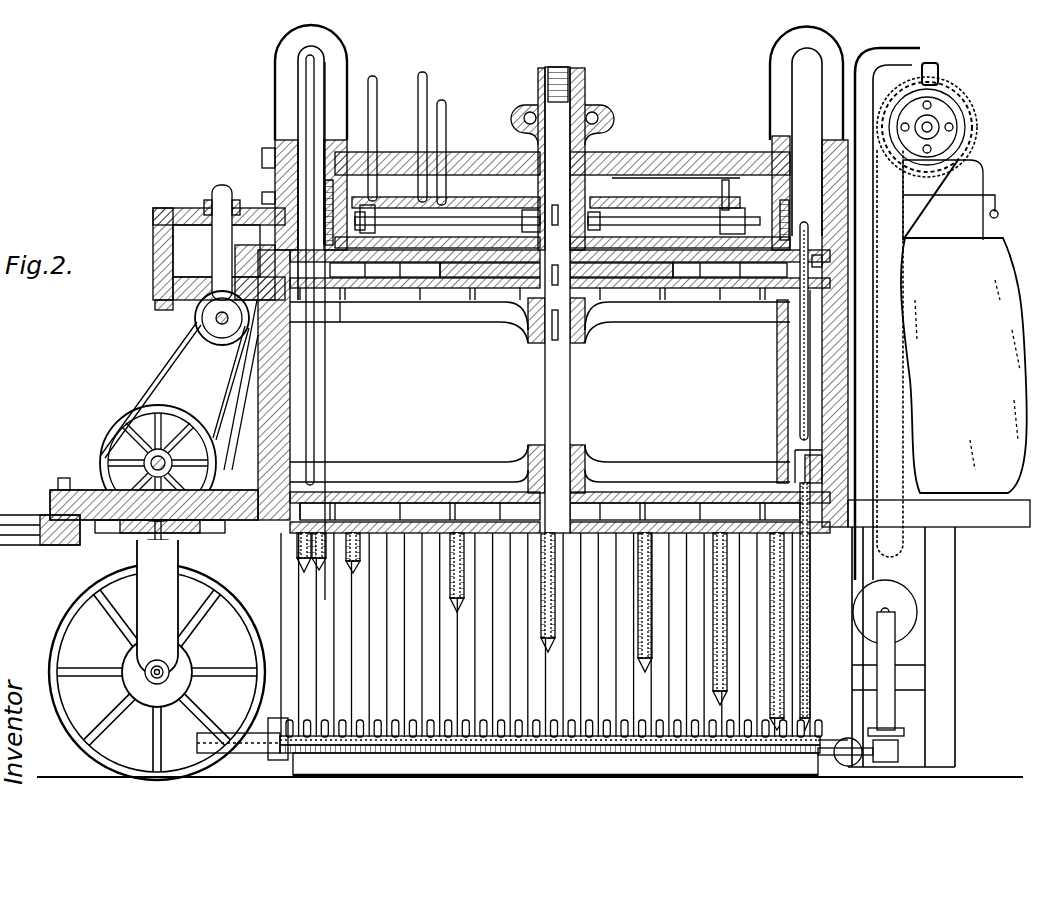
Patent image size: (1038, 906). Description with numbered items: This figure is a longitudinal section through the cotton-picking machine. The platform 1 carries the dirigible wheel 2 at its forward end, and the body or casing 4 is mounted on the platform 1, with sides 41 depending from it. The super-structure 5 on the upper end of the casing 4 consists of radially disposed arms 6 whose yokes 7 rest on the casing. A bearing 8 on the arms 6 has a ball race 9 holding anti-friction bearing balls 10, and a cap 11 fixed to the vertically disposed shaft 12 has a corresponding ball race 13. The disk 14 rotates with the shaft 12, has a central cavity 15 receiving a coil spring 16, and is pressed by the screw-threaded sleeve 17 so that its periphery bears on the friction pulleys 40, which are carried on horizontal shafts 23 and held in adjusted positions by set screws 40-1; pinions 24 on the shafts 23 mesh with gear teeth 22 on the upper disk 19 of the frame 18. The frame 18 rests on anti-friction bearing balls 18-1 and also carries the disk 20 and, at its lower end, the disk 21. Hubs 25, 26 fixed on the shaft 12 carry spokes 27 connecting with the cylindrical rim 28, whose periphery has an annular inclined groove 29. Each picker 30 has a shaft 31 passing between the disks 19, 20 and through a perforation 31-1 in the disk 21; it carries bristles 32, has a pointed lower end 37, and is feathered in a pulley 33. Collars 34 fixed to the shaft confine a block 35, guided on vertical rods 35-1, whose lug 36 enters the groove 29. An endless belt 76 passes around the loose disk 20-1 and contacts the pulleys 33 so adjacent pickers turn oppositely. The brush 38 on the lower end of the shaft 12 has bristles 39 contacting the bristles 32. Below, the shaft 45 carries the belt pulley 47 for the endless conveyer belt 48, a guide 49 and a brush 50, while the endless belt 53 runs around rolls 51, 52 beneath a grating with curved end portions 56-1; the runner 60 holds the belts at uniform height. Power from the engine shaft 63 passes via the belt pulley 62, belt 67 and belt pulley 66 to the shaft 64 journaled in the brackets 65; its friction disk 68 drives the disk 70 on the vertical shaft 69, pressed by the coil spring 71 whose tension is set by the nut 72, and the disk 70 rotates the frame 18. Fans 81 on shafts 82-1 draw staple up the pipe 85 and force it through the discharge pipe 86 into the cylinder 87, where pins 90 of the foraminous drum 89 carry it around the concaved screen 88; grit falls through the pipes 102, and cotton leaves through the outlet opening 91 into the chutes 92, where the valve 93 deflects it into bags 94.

The platform 1 is at (115, 520).
The dirigible wheel 2 is at (66, 655).
The body or casing 4 is at (270, 525).
The super-structure 5 is at (275, 157).
The radially disposed arms 6 is at (419, 150).
The yokes 7 is at (280, 96).
The bearing 8 is at (603, 152).
The ball race 9 is at (602, 140).
The anti-friction bearing balls 10 is at (592, 112).
The cap 11 is at (546, 112).
The vertically disposed shaft 12 is at (640, 150).
The ball race 13 is at (522, 122).
The disk 14 is at (690, 165).
The cavity 15 is at (675, 187).
The coil spring 16 is at (628, 162).
The sleeve 17 is at (538, 180).
The frame 18 is at (268, 445).
The anti-friction bearing balls 18-1 is at (305, 442).
The disk 19 is at (408, 205).
The disk 20 is at (440, 305).
The disk 20-1 is at (495, 305).
The disk 21 is at (425, 540).
The gear teeth 22 is at (260, 240).
The horizontally disposed shafts 23 is at (442, 200).
The pinions 24 is at (325, 195).
The hub 25 is at (590, 345).
The hub 26 is at (588, 460).
The spokes 27 is at (715, 345).
The cylindrical rim 28 is at (774, 402).
The annular inclined groove 29 is at (775, 482).
The pickers 30 is at (304, 565).
The shaft 31 is at (308, 62).
The perforation 31-1 is at (342, 559).
The bristles or brushes 32 is at (292, 535).
The pulleys 33 is at (205, 322).
The collars 34 is at (245, 352).
The block 35 is at (238, 325).
The vertically disposed rods 35-1 is at (410, 482).
The lug 36 is at (340, 330).
The pointed lower end 37 is at (652, 668).
The brush 38 is at (506, 545).
The bristles 39 is at (323, 575).
The friction pulleys 40 is at (368, 208).
The set screws 40-1 is at (728, 208).
The sides 41 is at (470, 706).
The shaft 45 is at (840, 768).
The belt pulley 47 is at (950, 766).
The endless belt 48 is at (900, 746).
The guide 49 is at (236, 750).
The brush 50 is at (642, 756).
The roll 51 is at (278, 762).
The roll 52 is at (860, 765).
The endless belt 53 is at (848, 742).
The curved end portions 56-1 is at (560, 738).
The runner 60 is at (772, 770).
The belt pulley 62 is at (120, 432).
The engine shaft 63 is at (150, 462).
The shaft 64 is at (200, 332).
The brackets 65 is at (175, 284).
The belt pulley 66 is at (175, 385).
The belt 67 is at (118, 410).
The friction disk 68 is at (216, 310).
The vertical shaft 69 is at (214, 206).
The disk 70 is at (160, 262).
The coil spring 71 is at (210, 213).
The nut 72 is at (207, 205).
The endless belt 76 is at (805, 265).
The fans or blowers 81 is at (902, 632).
The shaft 82-1 is at (890, 612).
The pipe 85 is at (896, 672).
The discharge pipe 86 is at (868, 572).
The cylinder 87 is at (958, 112).
The concaved screen 88 is at (925, 170).
The foraminous drum 89 is at (972, 132).
The radially disposed pins 90 is at (940, 86).
The outlet opening 91 is at (975, 166).
The chutes 92 is at (983, 178).
The valve 93 is at (996, 213).
The bags or receptacles 94 is at (964, 365).
The pipes 102 is at (888, 358).